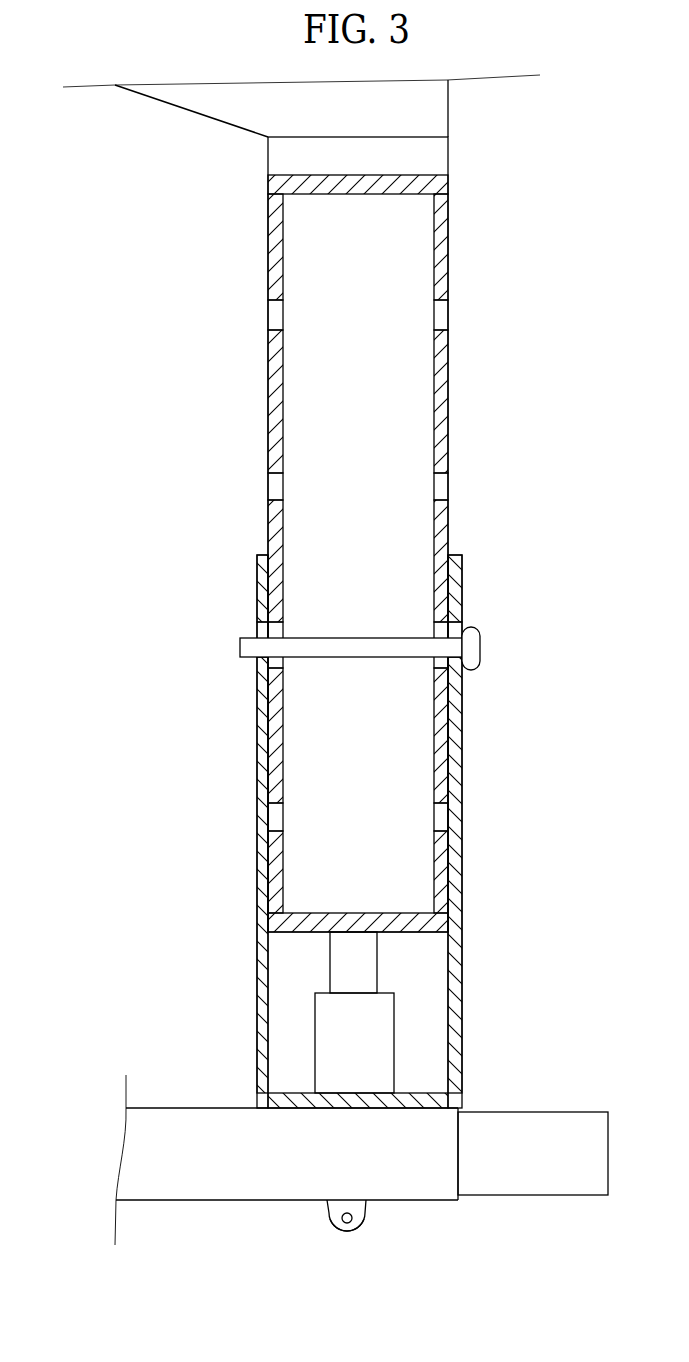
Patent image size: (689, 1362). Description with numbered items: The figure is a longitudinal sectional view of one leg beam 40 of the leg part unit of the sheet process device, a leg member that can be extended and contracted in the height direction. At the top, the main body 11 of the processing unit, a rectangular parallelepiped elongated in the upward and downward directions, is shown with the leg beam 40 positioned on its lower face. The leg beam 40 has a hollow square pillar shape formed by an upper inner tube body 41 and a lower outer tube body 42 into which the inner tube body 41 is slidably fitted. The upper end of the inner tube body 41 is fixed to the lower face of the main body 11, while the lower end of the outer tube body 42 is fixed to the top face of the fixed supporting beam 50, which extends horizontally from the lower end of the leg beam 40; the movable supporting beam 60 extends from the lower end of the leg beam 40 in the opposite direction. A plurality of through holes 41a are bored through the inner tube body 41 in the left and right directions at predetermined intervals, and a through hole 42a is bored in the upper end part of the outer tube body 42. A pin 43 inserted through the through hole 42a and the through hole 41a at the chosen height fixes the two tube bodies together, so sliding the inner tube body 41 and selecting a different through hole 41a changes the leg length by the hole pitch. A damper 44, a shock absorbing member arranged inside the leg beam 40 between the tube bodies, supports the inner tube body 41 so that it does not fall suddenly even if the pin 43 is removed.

The main body 11 is at (435, 92).
The leg beam 40 is at (133, 370).
The inner tube body 41 is at (291, 534).
The through holes 41a is at (449, 313).
The outer tube body 42 is at (252, 595).
The through hole 42a is at (455, 630).
The pin 43 is at (445, 647).
The damper 44 is at (387, 1010).
The fixed supporting beam 50 is at (187, 1110).
The movable supporting beam 60 is at (548, 1123).